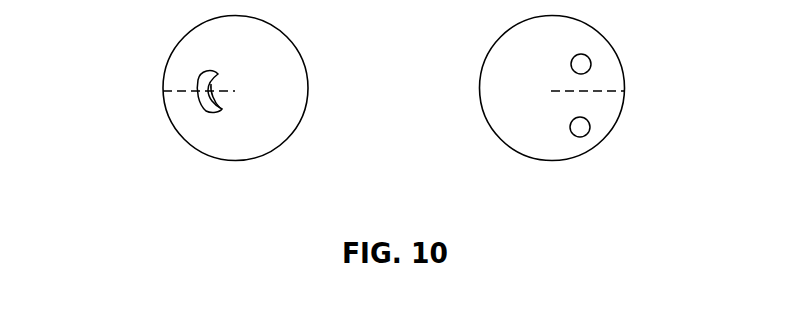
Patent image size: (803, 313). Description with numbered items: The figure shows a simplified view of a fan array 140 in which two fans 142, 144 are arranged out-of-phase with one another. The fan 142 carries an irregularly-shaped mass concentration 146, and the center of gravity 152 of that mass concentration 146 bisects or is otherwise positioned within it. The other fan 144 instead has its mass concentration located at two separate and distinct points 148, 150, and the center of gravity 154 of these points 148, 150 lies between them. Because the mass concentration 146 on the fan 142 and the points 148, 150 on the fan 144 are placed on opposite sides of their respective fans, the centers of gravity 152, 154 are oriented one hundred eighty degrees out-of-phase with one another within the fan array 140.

The fan array 140 is at (178, 110).
The fan 142 is at (227, 159).
The fan 144 is at (570, 157).
The irregularly-shaped mass concentration 146 is at (205, 103).
The point 148 is at (581, 55).
The point 150 is at (586, 124).
The center of gravity 152 is at (215, 101).
The center of gravity 154 is at (573, 95).